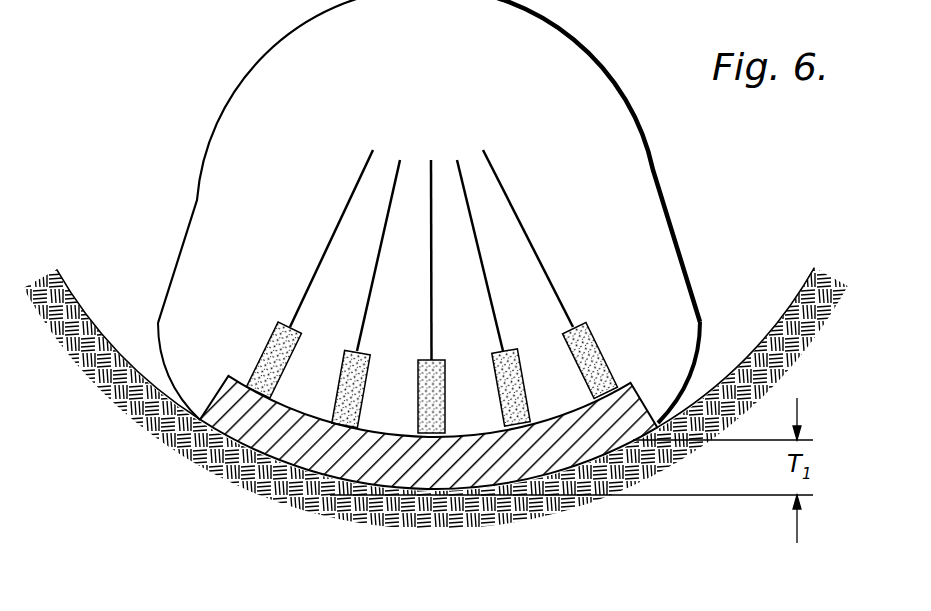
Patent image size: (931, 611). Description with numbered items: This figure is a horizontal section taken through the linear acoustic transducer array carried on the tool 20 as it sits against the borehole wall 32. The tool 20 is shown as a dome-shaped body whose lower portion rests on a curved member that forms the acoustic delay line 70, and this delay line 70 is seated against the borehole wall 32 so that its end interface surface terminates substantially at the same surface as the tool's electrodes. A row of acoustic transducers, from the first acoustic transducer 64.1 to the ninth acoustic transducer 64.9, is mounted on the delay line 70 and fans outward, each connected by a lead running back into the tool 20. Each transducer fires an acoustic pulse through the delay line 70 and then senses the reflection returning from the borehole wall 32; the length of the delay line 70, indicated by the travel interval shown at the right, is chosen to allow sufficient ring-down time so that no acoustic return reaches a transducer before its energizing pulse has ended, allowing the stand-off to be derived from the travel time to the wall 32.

The tool 20 is at (655, 167).
The borehole wall 32 is at (77, 307).
The acoustic transducer 64.1 is at (263, 348).
The acoustic transducer 64.9 is at (597, 338).
The acoustic delay line 70 is at (427, 472).